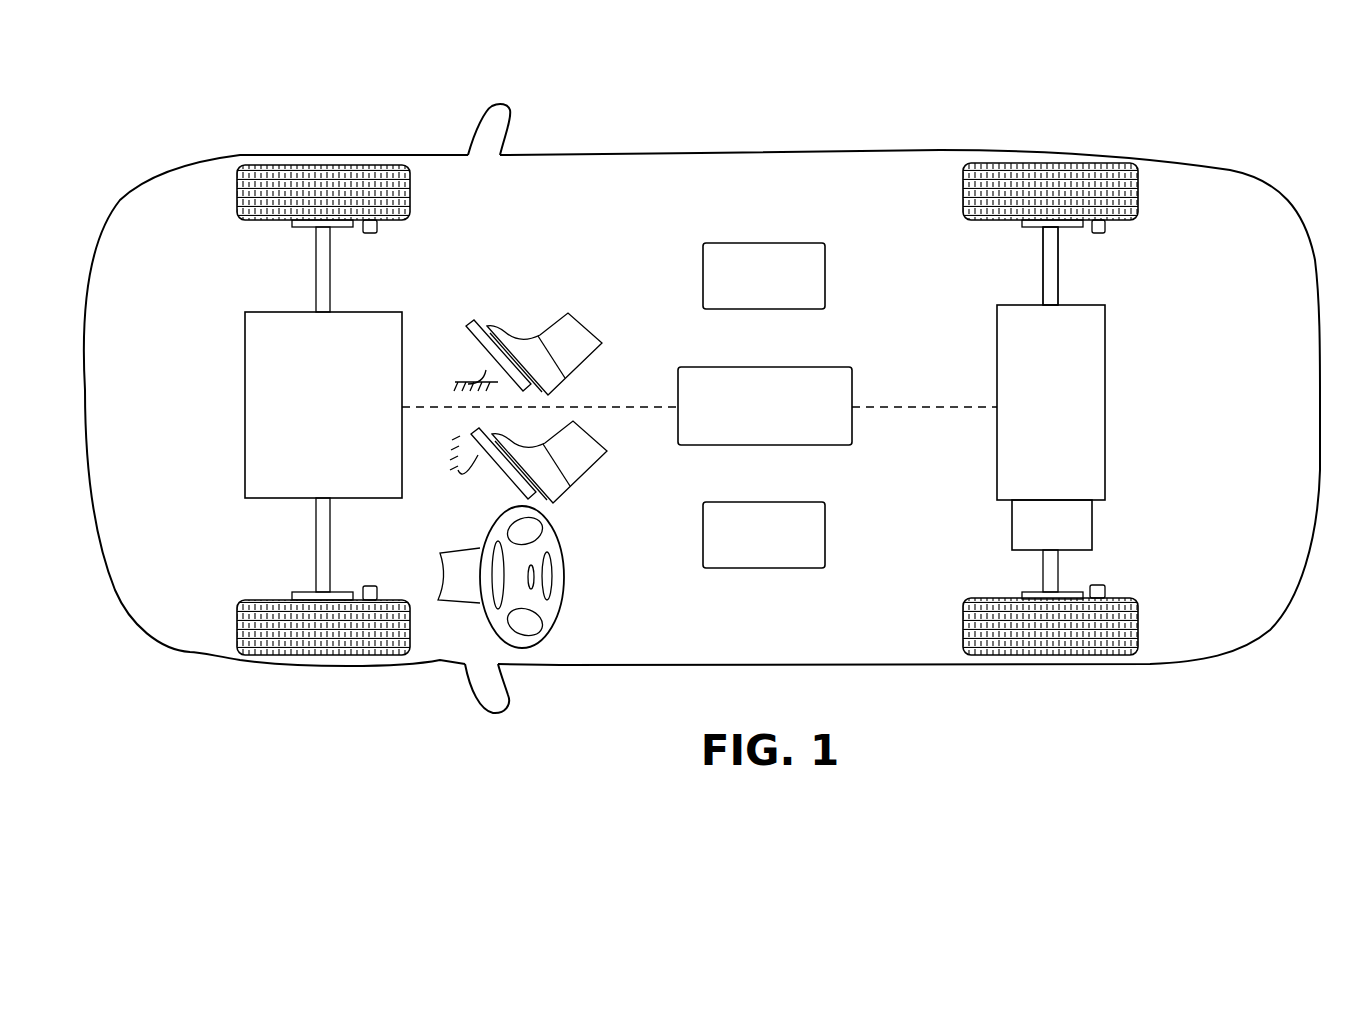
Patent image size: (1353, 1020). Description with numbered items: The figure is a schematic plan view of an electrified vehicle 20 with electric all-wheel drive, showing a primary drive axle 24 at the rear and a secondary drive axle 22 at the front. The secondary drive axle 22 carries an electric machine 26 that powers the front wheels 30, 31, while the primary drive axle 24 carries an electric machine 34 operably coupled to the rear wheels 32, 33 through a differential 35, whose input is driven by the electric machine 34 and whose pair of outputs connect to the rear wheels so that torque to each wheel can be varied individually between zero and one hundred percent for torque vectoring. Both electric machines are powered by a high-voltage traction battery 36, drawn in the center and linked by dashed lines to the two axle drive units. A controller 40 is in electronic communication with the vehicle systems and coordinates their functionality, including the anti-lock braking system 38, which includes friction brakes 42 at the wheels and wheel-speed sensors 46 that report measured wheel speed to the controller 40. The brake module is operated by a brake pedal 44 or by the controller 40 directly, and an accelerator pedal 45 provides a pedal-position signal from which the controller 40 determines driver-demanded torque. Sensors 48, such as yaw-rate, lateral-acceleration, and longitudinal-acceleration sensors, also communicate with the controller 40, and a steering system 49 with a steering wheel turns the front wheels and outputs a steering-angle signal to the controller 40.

The electrified vehicle 20 is at (708, 153).
The secondary drive axle 22 is at (232, 289).
The primary drive axle 24 is at (1124, 386).
The electric machine 26 is at (323, 405).
The wheel 30 is at (236, 627).
The wheel 31 is at (236, 190).
The wheel 32 is at (1138, 627).
The wheel 33 is at (1138, 190).
The electric machine 34 is at (1051, 402).
The differential 35 is at (1052, 525).
The traction battery 36 is at (738, 367).
The anti-lock braking system 38 is at (1088, 266).
The controller 40 is at (738, 243).
The friction brake 42 is at (1030, 228).
The brake pedal 44 is at (498, 487).
The accelerator pedal 45 is at (468, 323).
The wheel-speed sensor 46 is at (1098, 234).
The sensors 48 is at (738, 502).
The steering system 49 is at (570, 538).